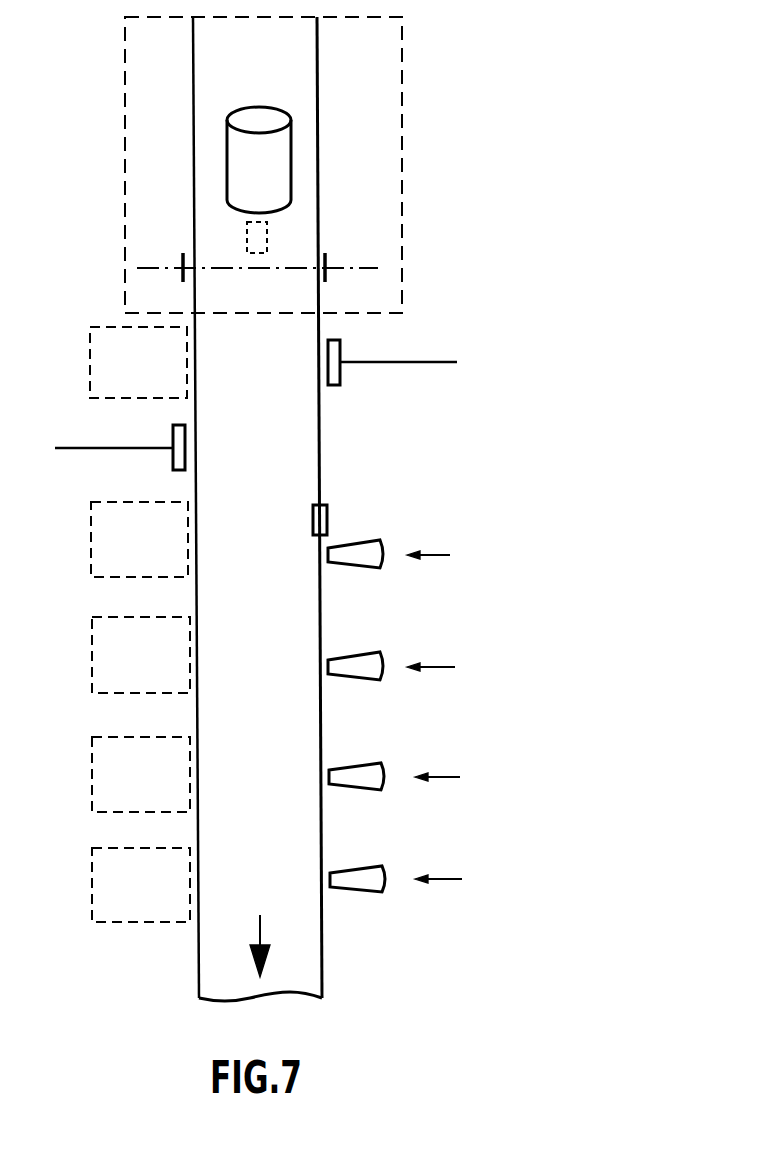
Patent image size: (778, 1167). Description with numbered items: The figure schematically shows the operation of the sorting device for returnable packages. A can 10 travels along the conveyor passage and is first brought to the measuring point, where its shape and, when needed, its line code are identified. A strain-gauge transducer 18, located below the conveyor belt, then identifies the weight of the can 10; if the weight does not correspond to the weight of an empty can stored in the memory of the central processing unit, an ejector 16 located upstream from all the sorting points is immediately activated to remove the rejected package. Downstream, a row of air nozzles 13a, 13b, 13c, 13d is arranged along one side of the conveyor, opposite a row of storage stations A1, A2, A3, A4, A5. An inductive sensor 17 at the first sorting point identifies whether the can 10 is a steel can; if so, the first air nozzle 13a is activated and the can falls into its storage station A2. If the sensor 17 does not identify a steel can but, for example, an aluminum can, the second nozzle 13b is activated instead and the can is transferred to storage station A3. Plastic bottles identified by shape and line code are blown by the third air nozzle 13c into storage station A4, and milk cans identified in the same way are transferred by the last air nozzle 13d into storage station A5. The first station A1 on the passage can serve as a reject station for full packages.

The can 10 is at (245, 112).
The strain-gauge transducer 18 is at (273, 240).
The ejector 16 is at (83, 448).
The inductive sensor 17 is at (326, 508).
The first air nozzle 13a is at (364, 543).
The second nozzle 13b is at (368, 655).
The third air nozzle 13c is at (368, 766).
The last air nozzle 13d is at (370, 869).
The storage station A1 is at (90, 376).
The storage station A2 is at (91, 548).
The storage station A3 is at (92, 662).
The storage station A4 is at (92, 783).
The storage station A5 is at (92, 900).